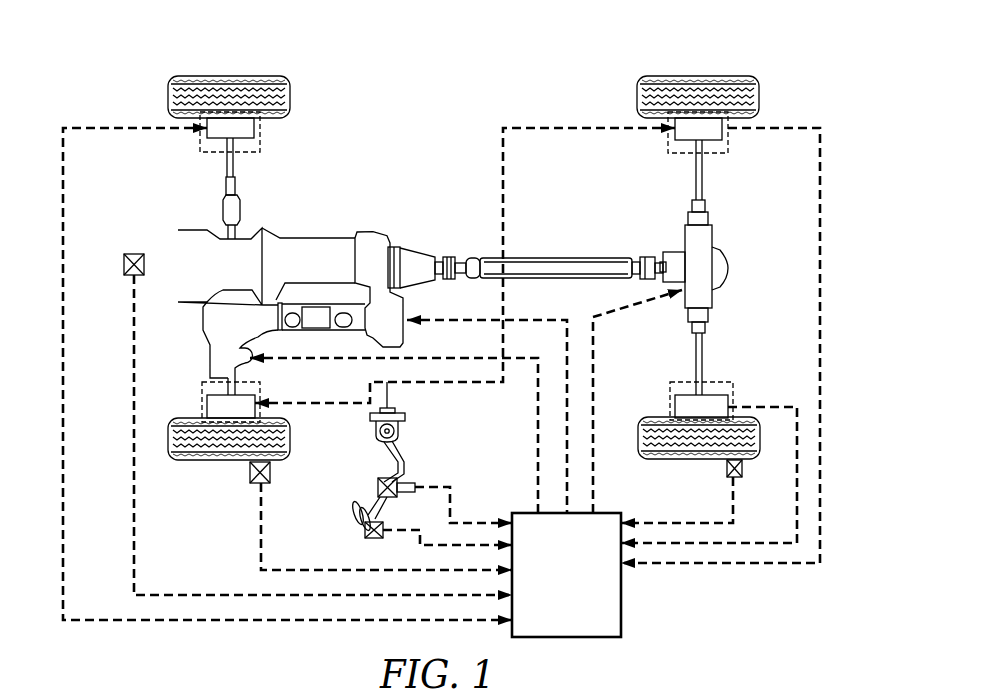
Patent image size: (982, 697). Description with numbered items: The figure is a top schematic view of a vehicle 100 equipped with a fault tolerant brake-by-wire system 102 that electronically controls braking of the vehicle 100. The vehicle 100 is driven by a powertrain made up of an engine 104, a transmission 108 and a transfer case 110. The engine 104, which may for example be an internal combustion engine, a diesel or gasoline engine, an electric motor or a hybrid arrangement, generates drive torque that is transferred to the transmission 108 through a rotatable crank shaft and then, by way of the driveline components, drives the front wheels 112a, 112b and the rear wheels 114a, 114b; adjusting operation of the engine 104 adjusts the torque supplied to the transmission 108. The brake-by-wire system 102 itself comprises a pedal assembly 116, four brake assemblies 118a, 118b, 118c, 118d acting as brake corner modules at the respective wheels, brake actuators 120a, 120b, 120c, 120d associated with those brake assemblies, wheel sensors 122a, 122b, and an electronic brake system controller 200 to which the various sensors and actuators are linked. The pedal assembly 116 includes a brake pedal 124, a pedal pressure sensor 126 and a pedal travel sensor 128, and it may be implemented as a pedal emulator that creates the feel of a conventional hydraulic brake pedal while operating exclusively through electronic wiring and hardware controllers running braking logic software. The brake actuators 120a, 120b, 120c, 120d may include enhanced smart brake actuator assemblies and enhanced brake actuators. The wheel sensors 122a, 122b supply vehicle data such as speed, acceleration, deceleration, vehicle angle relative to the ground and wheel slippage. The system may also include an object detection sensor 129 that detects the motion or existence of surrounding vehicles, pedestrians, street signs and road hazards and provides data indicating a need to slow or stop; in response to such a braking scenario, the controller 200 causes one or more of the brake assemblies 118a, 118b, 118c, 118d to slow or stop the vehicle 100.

The vehicle 100 is at (123, 92).
The fault tolerant BBW system 102 is at (628, 587).
The engine 104 is at (178, 232).
The transmission 108 is at (330, 230).
The transfer case 110 is at (378, 228).
The front wheel 112a is at (214, 462).
The front wheel 112b is at (210, 72).
The rear wheel 114a is at (700, 462).
The rear wheel 114b is at (695, 72).
The pedal assembly 116 is at (405, 452).
The brake assembly 118a is at (202, 411).
The brake assembly 118b is at (296, 139).
The brake assembly 118c is at (753, 144).
The brake assembly 118d is at (703, 379).
The brake actuator 120a is at (232, 407).
The brake actuator 120b is at (240, 132).
The brake actuator 120c is at (705, 133).
The brake actuator 120d is at (705, 407).
The wheel sensor 122a is at (254, 487).
The wheel sensor 122b is at (733, 478).
The brake pedal 124 is at (356, 507).
The pedal pressure sensor 126 is at (378, 482).
The pedal travel sensor 128 is at (368, 535).
The object detection sensor 129 is at (128, 278).
The electronic brake system (EBS) controller 200 is at (585, 588).